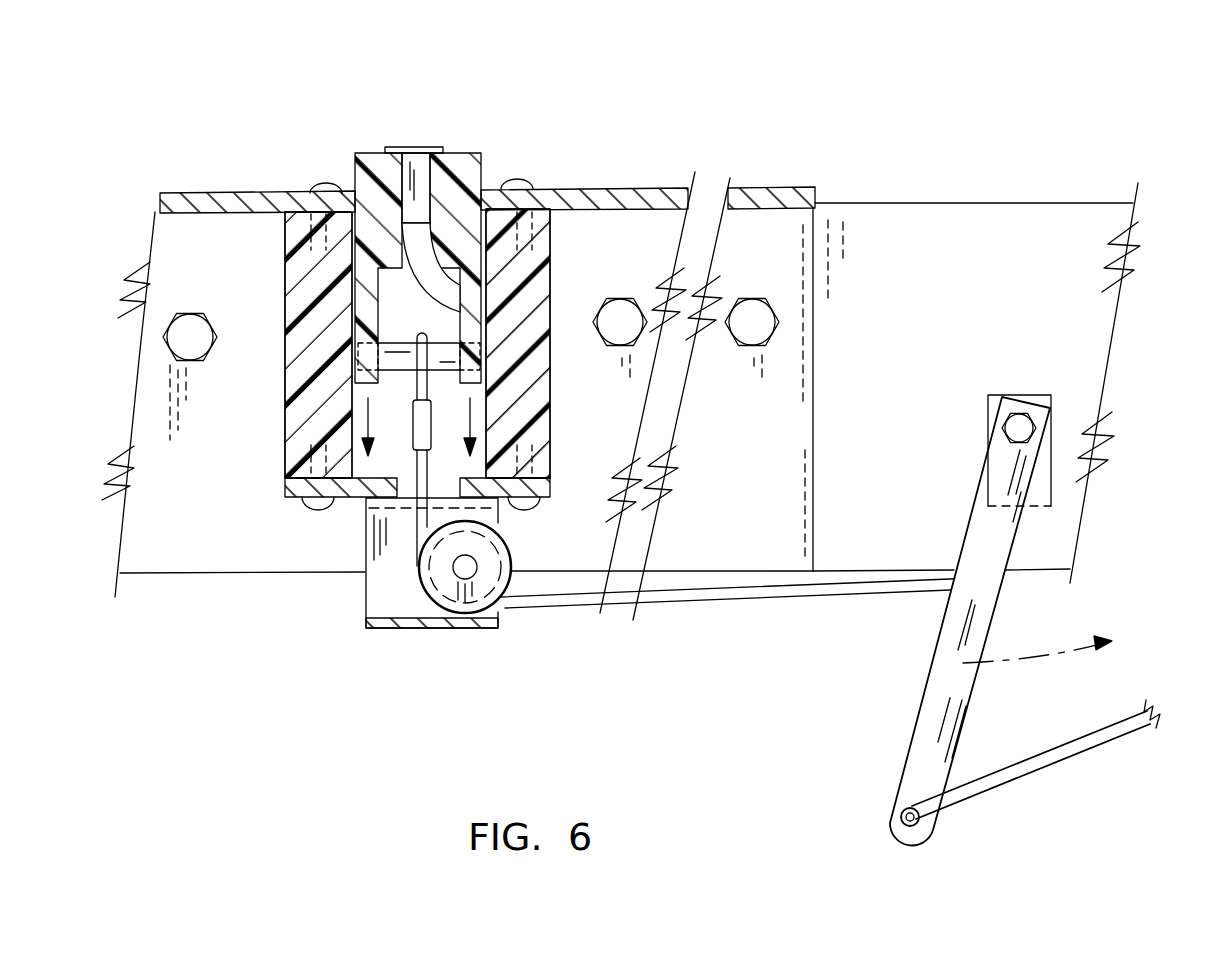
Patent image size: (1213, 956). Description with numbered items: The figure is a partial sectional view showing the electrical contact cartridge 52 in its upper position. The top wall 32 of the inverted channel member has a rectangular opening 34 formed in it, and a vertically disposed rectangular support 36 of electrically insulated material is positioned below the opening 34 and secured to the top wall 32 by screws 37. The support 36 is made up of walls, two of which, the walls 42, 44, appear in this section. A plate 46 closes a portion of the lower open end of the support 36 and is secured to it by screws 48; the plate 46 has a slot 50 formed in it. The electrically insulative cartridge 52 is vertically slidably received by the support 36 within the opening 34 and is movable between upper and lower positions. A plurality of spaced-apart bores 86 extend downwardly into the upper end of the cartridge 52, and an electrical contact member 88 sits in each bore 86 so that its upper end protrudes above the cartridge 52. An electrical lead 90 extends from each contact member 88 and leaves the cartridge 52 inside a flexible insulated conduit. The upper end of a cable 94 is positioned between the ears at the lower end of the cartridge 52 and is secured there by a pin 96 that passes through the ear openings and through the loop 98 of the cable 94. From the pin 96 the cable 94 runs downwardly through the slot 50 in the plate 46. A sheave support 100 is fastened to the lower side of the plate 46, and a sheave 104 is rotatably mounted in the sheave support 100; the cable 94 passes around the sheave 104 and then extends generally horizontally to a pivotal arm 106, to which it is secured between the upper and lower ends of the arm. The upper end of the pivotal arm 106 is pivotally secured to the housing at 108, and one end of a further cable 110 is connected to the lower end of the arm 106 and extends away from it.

The top wall 32 is at (642, 190).
The rectangular opening 34 is at (488, 205).
The rectangular support 36 is at (283, 407).
The screws 37 is at (325, 183).
The wall 42 is at (537, 385).
The wall 44 is at (290, 288).
The plate 46 is at (362, 490).
The screws 48 is at (307, 505).
The slot 50 is at (498, 507).
The cartridge 52 is at (374, 138).
The openings 86 is at (448, 157).
The electrical contact member 88 is at (418, 149).
The electrical lead 90 is at (548, 212).
The cable 94 is at (414, 535).
The pin 96 is at (417, 343).
The loop 98 is at (409, 540).
The sheave support 100 is at (467, 632).
The sheave 104 is at (489, 592).
The pivotal arm 106 is at (943, 705).
The pivot 108 is at (1022, 425).
The cable 110 is at (1057, 762).